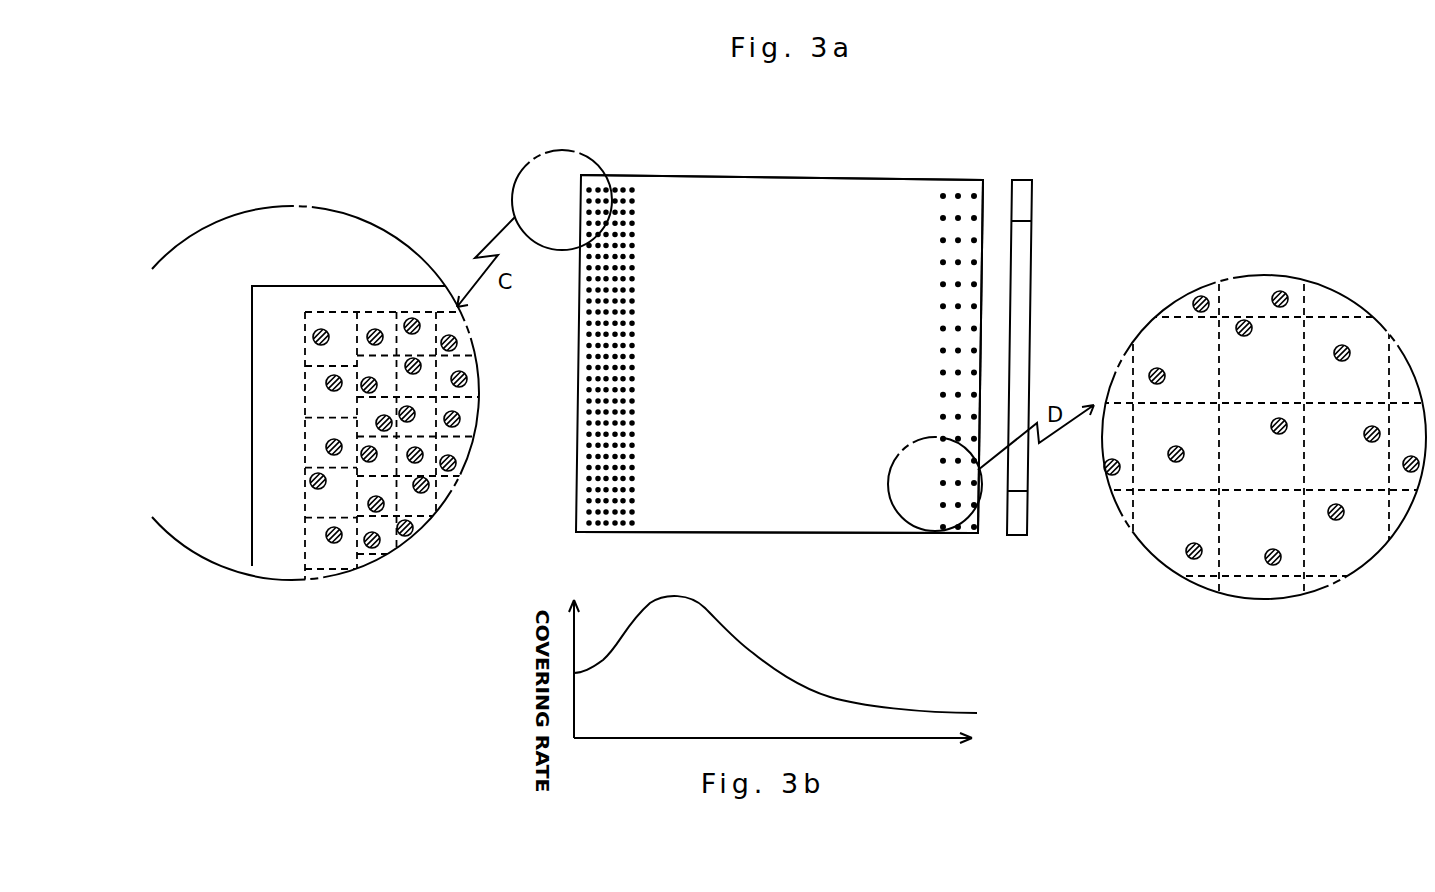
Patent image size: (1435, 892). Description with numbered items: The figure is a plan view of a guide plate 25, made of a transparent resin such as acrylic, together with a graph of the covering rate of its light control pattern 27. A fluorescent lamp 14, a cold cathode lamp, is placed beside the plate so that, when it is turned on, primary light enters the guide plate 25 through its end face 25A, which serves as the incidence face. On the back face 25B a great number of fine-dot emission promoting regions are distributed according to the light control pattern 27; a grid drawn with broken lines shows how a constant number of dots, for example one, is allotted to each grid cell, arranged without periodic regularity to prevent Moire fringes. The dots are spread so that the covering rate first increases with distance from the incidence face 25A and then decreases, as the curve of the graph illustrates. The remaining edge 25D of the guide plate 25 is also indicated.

The guide plate 25 is at (845, 517).
The end face 25A is at (984, 204).
The back face 25B is at (768, 517).
The fourth side of substrate 25D is at (730, 190).
The fluorescent lamp 14 is at (1021, 461).
The light control pattern 27 is at (460, 424).